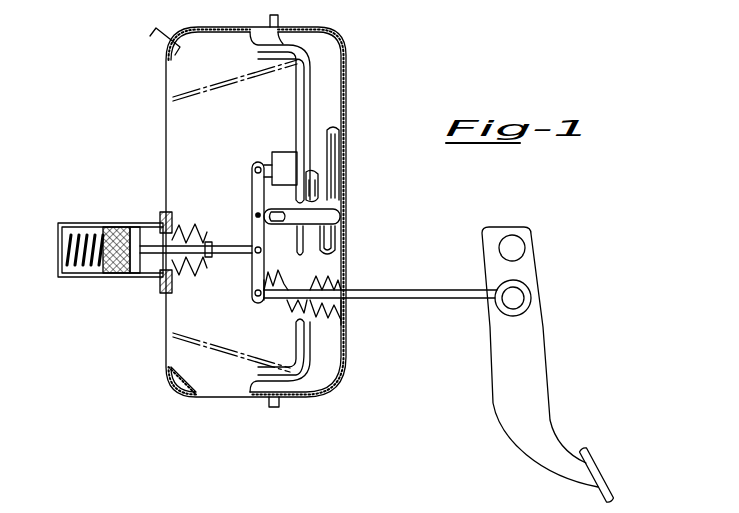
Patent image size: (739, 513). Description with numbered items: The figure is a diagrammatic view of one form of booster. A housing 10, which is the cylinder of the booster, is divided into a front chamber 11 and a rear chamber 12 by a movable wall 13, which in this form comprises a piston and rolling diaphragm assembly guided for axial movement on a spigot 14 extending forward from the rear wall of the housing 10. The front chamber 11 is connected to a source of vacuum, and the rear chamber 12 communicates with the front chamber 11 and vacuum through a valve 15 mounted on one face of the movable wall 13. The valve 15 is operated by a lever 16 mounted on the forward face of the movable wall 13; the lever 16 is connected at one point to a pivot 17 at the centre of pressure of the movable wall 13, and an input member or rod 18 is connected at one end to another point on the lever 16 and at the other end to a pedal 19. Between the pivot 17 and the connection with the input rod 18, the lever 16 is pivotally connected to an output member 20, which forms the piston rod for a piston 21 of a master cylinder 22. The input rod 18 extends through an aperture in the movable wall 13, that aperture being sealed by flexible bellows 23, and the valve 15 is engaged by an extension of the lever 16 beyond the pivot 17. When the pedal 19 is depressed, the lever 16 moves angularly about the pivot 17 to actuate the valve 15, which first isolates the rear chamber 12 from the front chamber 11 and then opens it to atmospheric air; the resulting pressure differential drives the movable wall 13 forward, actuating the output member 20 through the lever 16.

The housing 10 is at (173, 378).
The front chamber 11 is at (250, 123).
The rear chamber 12 is at (333, 111).
The movable wall 13 is at (306, 85).
The spigot 14 is at (330, 217).
The valve 15 is at (287, 180).
The lever 16 is at (256, 202).
The pivot 17 is at (256, 215).
The input member or rod 18 is at (408, 298).
The pedal 19 is at (527, 333).
The output member 20 is at (135, 233).
The piston 21 is at (107, 278).
The master cylinder 22 is at (88, 223).
The flexible bellows 23 is at (290, 303).